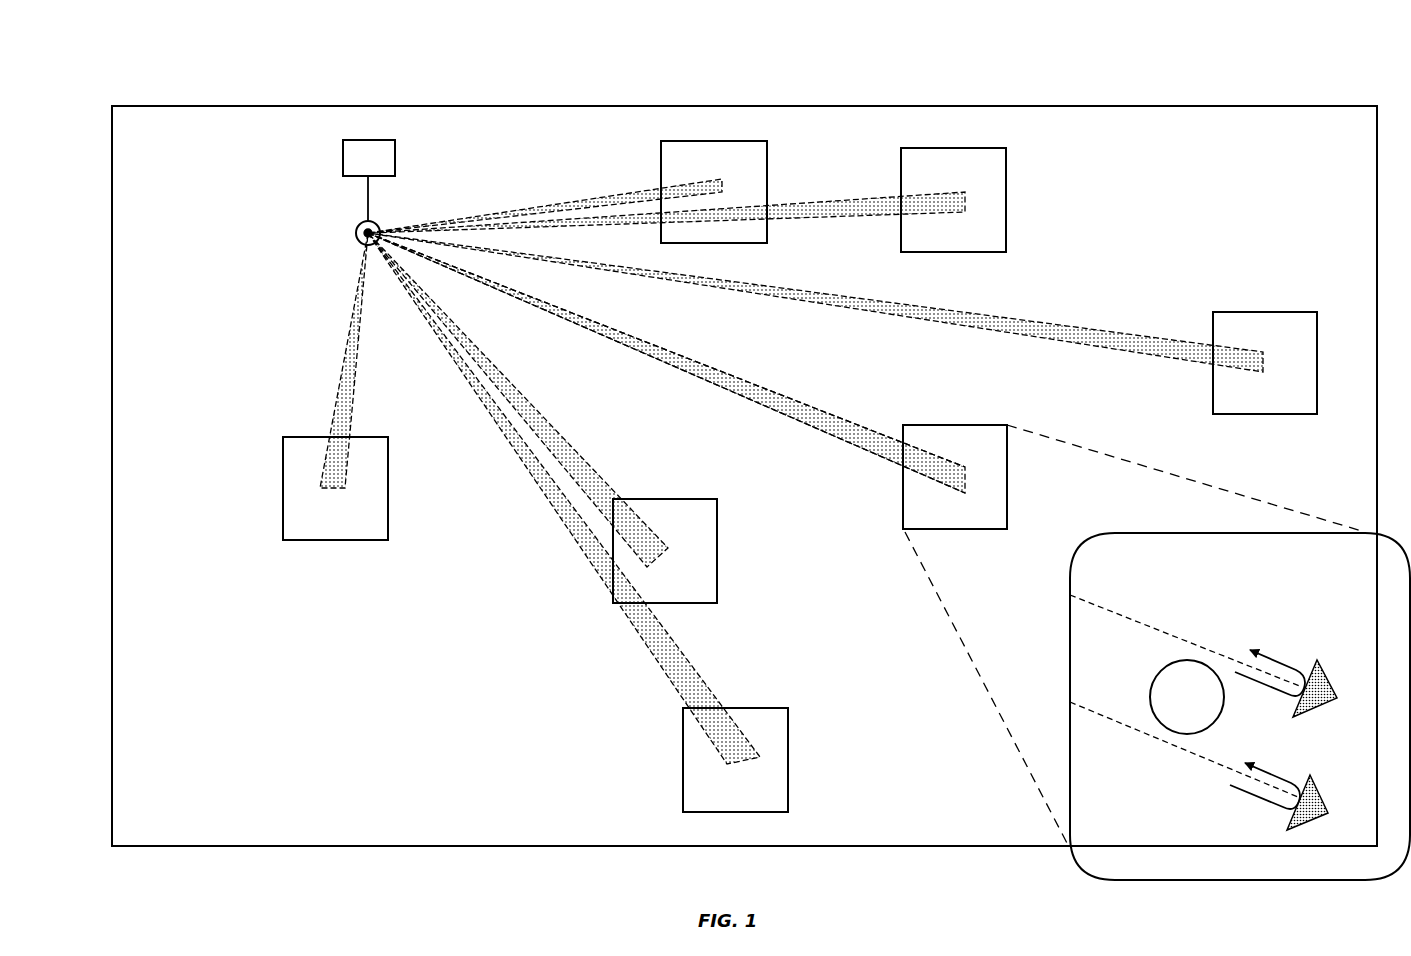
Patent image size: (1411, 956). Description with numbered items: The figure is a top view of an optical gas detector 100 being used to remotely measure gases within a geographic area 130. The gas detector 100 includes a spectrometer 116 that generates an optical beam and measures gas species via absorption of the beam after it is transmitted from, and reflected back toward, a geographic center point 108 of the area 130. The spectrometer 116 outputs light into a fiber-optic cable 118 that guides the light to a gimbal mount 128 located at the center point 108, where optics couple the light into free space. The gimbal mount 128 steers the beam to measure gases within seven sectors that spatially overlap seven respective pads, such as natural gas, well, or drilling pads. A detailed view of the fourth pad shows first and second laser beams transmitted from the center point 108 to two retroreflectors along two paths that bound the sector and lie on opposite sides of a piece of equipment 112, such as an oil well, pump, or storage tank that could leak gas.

The optical gas detector 100 is at (124, 82).
The geographic area 130 is at (1247, 105).
The spectrometer 116 is at (369, 158).
The fiber-optic cable 118 is at (368, 192).
The gimbal mount 128 is at (361, 220).
The geographic center point 108 is at (366, 234).
The equipment 112 is at (1187, 697).